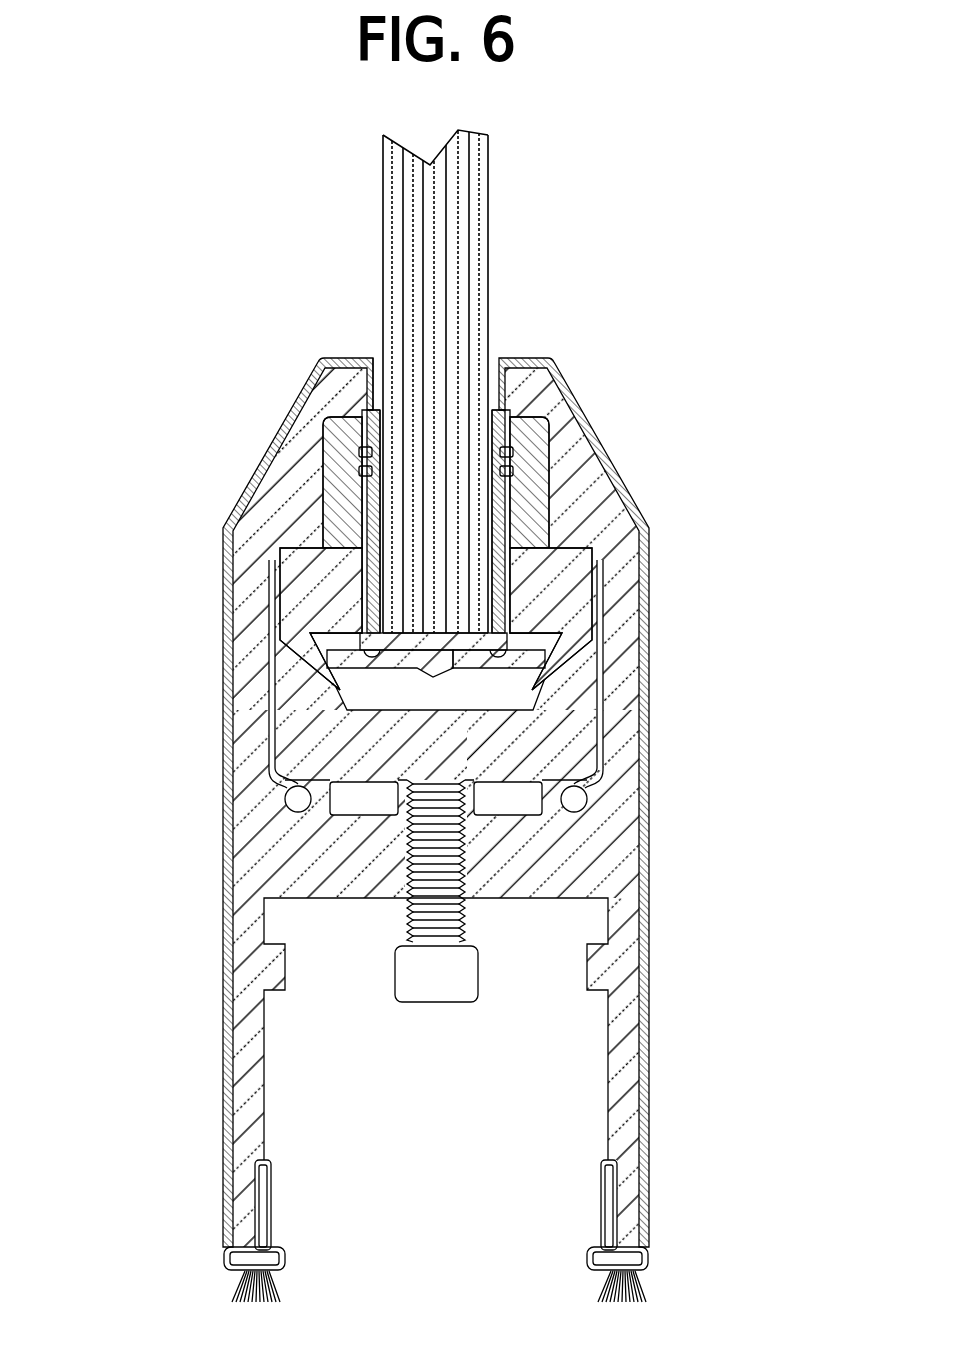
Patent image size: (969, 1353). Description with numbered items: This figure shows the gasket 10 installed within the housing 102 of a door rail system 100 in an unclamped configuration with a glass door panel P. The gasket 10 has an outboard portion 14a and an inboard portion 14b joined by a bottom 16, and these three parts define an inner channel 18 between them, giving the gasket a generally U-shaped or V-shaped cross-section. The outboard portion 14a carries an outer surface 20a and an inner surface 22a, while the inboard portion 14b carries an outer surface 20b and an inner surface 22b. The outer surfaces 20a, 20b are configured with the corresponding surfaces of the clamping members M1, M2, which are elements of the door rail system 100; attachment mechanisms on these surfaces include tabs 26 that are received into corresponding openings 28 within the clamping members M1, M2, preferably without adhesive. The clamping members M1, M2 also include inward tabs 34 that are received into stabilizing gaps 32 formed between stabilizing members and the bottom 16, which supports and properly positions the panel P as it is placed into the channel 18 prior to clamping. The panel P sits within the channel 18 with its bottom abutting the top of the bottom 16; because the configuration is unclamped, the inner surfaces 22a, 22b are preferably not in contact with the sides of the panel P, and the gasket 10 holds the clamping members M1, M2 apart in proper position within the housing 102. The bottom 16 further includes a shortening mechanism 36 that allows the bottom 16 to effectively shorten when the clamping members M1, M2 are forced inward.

The panel P is at (488, 204).
The gasket 10 is at (418, 548).
The outboard portion 14a is at (367, 407).
The inboard portion 14b is at (505, 405).
The bottom 16 is at (423, 660).
The inner channel 18 is at (375, 340).
The outer surface of outboard portion 20a is at (357, 497).
The outer surface of inboard portion 20b is at (517, 492).
The inner surface of outboard portion 22a is at (418, 548).
The inner surface of inboard portion 22b is at (462, 532).
The tabs 26 is at (349, 450).
The openings 28 is at (355, 470).
The stabilizing gaps 32 is at (487, 652).
The inward tabs 34 is at (487, 655).
The shortening mechanism 36 is at (432, 690).
The door rail system 100 is at (190, 688).
The housing 102 is at (221, 578).
The clamping member M1 is at (330, 586).
The clamping member M2 is at (545, 582).